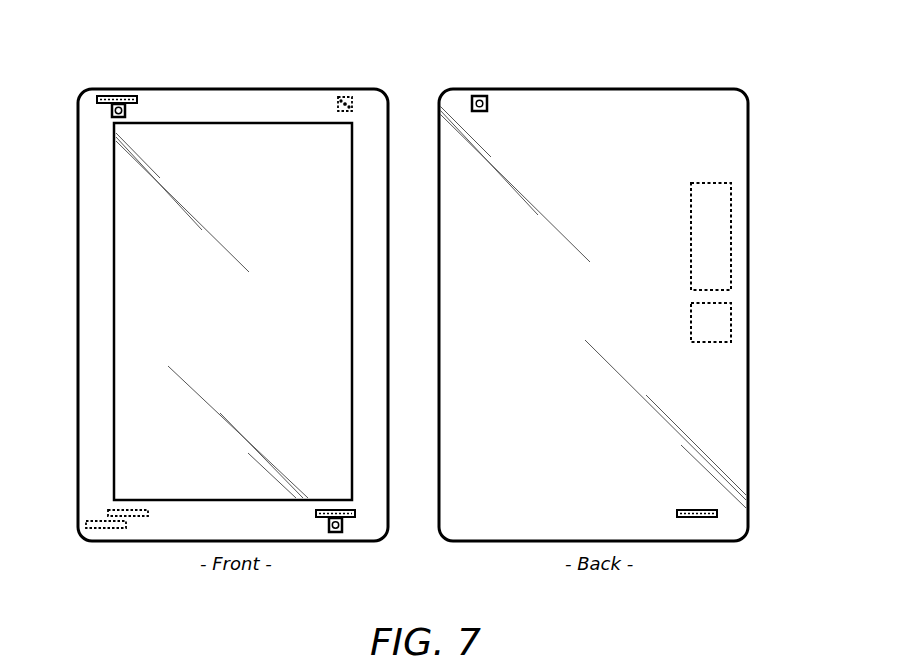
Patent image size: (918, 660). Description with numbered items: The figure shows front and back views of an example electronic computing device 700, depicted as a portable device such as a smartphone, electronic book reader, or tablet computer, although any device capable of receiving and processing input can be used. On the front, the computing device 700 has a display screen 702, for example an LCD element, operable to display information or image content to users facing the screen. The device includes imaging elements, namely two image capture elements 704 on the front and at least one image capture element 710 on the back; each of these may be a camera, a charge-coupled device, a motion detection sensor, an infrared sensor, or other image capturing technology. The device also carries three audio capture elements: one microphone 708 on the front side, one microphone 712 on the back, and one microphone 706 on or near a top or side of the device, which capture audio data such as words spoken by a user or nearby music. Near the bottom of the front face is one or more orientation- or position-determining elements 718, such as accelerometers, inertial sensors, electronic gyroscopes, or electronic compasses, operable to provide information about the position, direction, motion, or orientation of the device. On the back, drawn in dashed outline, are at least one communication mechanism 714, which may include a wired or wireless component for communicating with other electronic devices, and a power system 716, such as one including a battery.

The electronic computing device 700 is at (777, 97).
The display screen 702 is at (113, 233).
The image capture elements 704 is at (112, 110).
The microphone 706 is at (123, 96).
The microphone 708 is at (345, 518).
The image capture element 710 is at (342, 97).
The microphone 712 is at (127, 517).
The communication mechanism 714 is at (731, 252).
The power system 716 is at (731, 325).
The orientation- or position-determining elements 718 is at (104, 528).